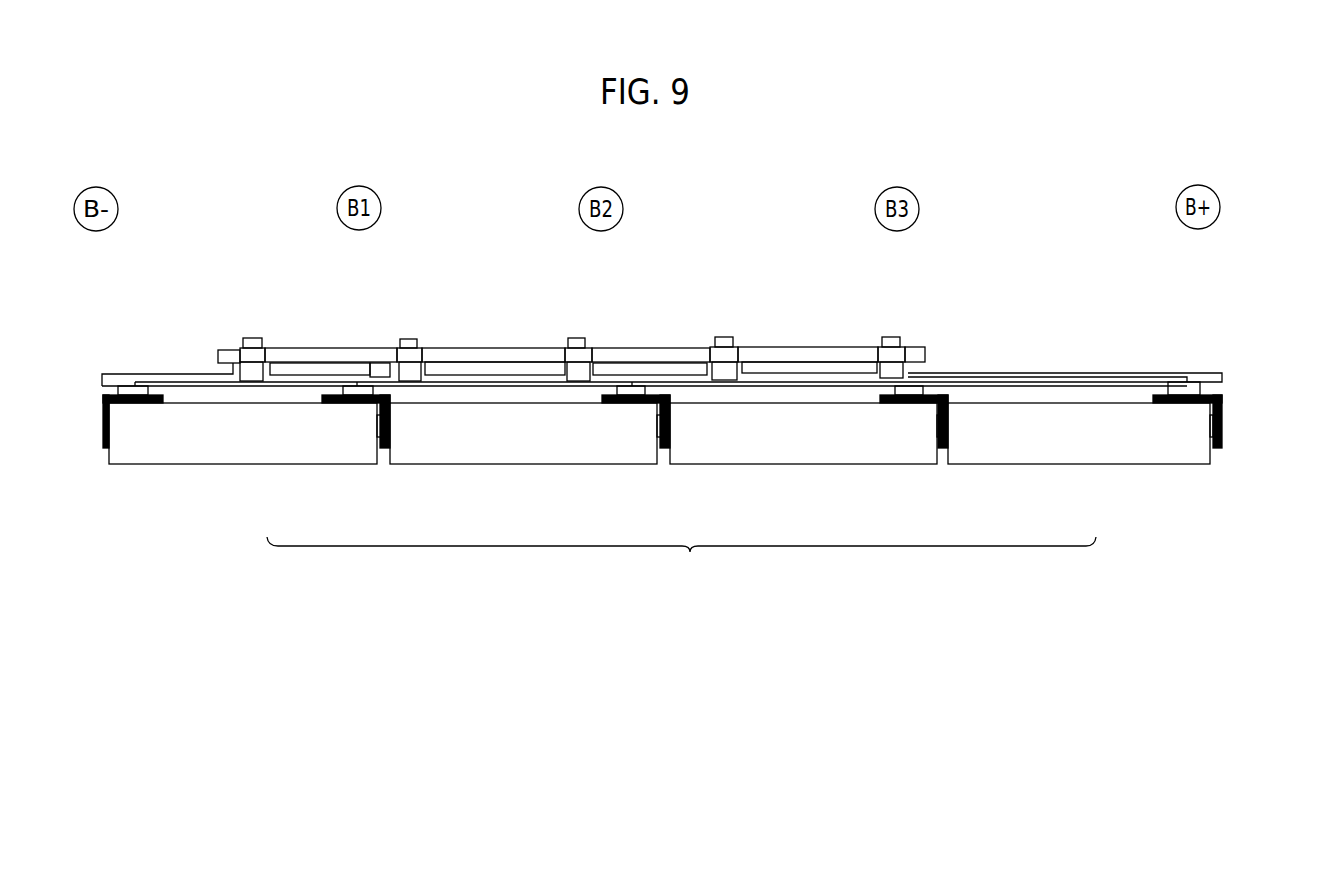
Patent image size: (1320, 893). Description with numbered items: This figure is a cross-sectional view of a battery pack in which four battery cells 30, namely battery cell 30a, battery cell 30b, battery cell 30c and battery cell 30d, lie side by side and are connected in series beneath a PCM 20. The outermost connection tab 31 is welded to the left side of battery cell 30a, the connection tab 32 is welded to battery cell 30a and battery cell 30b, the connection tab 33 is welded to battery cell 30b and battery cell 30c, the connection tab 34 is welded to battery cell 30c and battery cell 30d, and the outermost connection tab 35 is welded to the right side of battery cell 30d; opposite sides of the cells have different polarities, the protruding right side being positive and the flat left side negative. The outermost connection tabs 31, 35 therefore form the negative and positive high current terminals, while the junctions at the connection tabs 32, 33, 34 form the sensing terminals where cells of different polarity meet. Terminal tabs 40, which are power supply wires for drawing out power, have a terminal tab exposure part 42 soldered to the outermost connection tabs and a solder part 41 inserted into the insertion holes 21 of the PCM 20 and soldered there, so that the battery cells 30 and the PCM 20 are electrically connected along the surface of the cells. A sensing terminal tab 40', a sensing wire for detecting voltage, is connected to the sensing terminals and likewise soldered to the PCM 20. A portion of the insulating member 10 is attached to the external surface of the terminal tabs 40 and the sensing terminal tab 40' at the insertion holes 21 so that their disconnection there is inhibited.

The insulating member 10 is at (1224, 376).
The PCM 20 is at (286, 352).
The insertion holes 21 is at (240, 343).
The battery cells 30 is at (681, 560).
The battery cell 30a is at (304, 452).
The battery cell 30b is at (513, 452).
The battery cell 30c is at (780, 452).
The battery cell 30d is at (1074, 452).
The outermost connection tab 31 is at (106, 443).
The connection tab 32 is at (393, 445).
The connection tab 33 is at (673, 445).
The connection tab 34 is at (952, 445).
The outermost connection tab 35 is at (1224, 412).
The terminal tabs 40 is at (167, 337).
The sensing terminal tab 40' is at (372, 337).
The solder part 41 is at (892, 337).
The terminal tab exposure part 42 is at (131, 391).